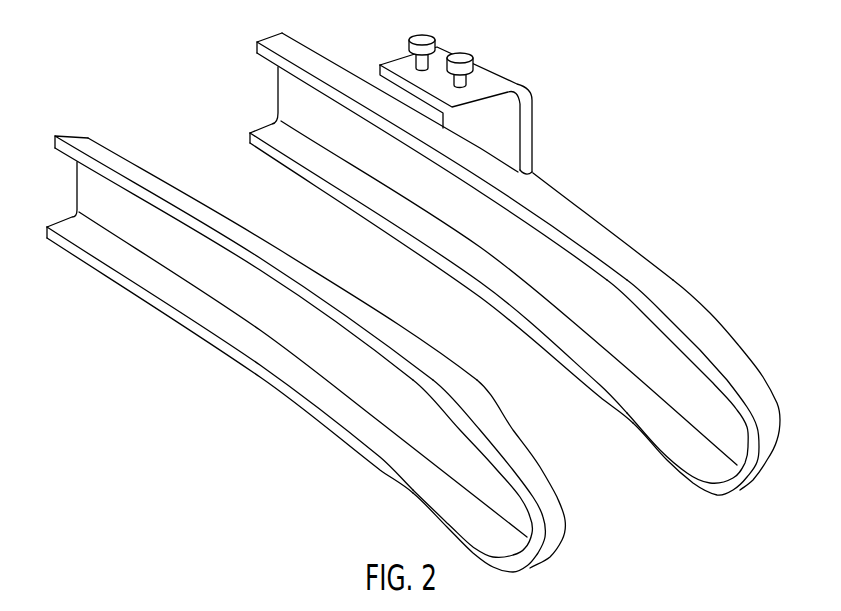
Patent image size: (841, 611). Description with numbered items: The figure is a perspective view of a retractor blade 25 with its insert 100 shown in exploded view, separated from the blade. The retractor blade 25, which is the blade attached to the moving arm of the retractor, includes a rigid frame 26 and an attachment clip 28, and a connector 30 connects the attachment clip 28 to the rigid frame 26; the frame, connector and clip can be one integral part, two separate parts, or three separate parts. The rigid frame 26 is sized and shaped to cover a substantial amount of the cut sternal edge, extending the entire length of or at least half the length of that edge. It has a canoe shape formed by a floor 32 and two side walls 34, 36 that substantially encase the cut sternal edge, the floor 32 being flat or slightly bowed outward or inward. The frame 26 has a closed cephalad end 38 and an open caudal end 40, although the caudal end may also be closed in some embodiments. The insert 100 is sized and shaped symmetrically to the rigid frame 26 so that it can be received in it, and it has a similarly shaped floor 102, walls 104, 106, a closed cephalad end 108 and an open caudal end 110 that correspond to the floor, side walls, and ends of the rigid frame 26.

The retractor blade 25 is at (512, 259).
The rigid frame 26 is at (512, 264).
The attachment clip 28 is at (398, 55).
The connector 30 is at (533, 133).
The floor 32 is at (553, 262).
The side wall 34 is at (250, 137).
The side wall 36 is at (262, 58).
The closed cephalad end 38 is at (781, 427).
The open caudal end 40 is at (276, 98).
The insert 100 is at (303, 354).
The floor 102 is at (318, 339).
The wall 104 is at (46, 229).
The wall 106 is at (57, 150).
The closed cephalad end 108 is at (561, 534).
The open caudal end 110 is at (76, 183).